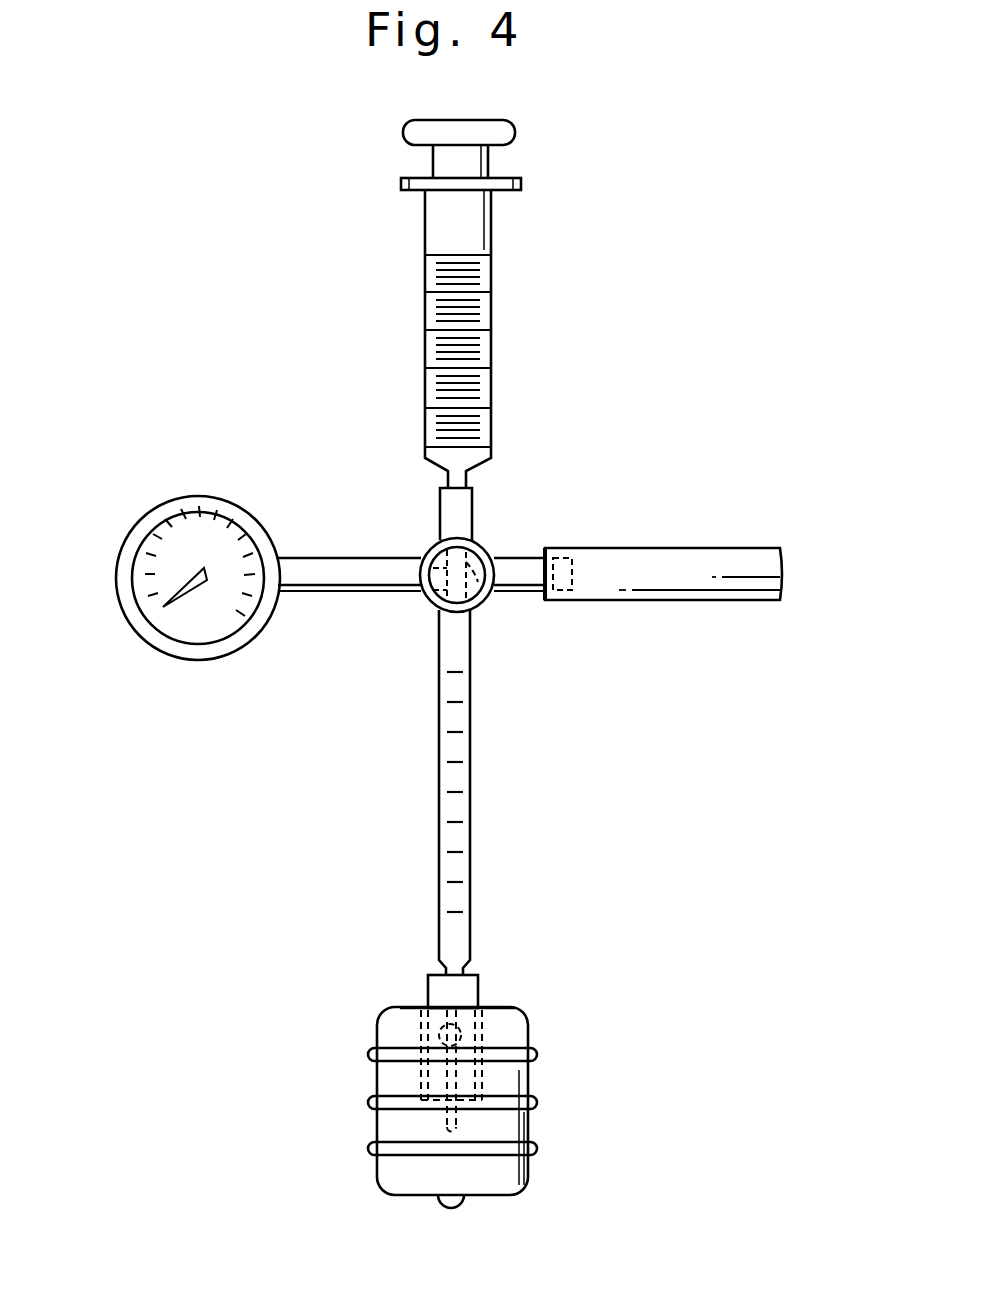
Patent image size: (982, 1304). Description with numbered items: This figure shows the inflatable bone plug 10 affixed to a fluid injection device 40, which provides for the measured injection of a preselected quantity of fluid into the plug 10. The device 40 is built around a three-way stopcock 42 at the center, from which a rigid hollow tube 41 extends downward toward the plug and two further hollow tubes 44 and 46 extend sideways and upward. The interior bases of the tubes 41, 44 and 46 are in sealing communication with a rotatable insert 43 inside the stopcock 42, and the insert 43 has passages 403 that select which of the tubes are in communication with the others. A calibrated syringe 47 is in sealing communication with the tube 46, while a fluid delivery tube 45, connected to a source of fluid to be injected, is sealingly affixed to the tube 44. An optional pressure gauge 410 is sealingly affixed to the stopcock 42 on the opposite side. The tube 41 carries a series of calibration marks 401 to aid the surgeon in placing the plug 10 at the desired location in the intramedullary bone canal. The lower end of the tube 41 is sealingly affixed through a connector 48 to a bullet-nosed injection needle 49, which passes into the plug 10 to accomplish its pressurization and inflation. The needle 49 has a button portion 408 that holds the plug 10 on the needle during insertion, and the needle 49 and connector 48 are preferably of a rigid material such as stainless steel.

The plug 10 is at (293, 1080).
The fluid injection device 40 is at (366, 818).
The tube 41 is at (471, 800).
The three-way stopcock 42 is at (424, 552).
The rotatable insert 43 is at (433, 599).
The hollow tube 44 is at (521, 594).
The fluid delivery tube 45 is at (696, 569).
The hollow tube 46 is at (473, 510).
The calibrated syringe 47 is at (492, 268).
The connector 48 is at (479, 988).
The bullet-nosed injection needle 49 is at (456, 1127).
The calibration marks 401 is at (447, 882).
The passages 403 is at (470, 583).
The button portion 408 is at (460, 1030).
The pressure gauge 410 is at (172, 496).